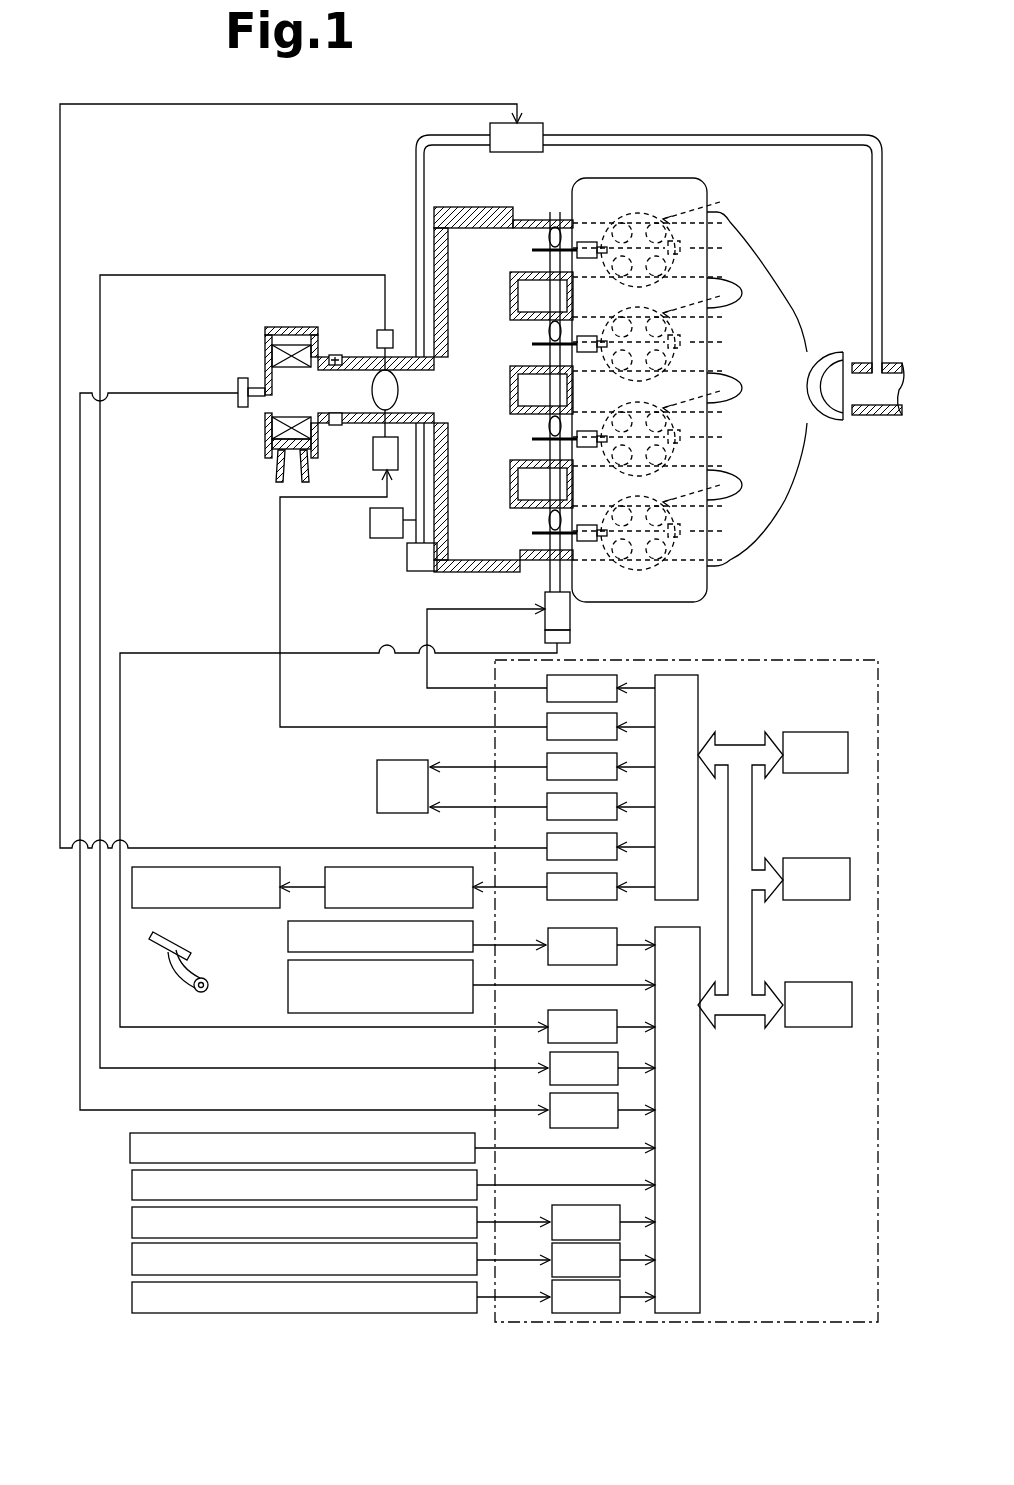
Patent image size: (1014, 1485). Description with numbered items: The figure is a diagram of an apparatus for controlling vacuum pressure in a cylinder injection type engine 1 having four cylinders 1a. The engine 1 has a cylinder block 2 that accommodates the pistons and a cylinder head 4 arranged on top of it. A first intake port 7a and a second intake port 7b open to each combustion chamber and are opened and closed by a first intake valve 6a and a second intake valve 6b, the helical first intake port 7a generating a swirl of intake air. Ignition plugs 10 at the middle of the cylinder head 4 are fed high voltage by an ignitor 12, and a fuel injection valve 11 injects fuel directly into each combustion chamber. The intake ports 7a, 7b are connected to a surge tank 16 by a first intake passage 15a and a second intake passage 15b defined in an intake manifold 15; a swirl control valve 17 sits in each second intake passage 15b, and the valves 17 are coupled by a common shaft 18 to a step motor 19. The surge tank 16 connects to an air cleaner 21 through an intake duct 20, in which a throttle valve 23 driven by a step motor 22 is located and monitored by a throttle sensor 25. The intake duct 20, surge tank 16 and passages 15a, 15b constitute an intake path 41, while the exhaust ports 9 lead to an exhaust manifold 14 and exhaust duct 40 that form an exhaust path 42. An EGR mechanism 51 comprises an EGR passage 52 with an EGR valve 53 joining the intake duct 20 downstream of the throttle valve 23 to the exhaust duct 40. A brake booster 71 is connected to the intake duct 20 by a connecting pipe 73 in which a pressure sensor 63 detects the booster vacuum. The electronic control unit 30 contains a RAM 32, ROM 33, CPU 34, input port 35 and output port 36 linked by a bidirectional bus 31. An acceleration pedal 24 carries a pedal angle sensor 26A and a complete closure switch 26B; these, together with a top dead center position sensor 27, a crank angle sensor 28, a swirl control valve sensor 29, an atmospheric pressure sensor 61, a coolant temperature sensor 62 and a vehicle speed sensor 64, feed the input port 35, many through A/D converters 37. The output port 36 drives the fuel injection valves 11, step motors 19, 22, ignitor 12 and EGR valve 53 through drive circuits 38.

The engine 1 is at (716, 169).
The cylinder 1a is at (706, 224).
The cylinder block 2 is at (695, 603).
The cylinder head 4 is at (726, 631).
The first intake valve 6a is at (626, 270).
The second intake valve 6b is at (632, 224).
The first intake port 7a is at (612, 625).
The second intake port 7b is at (616, 195).
The exhaust port 9 is at (716, 254).
The ignition plug 10 is at (302, 866).
The fuel injection valve 11 is at (589, 242).
The ignitor 12 is at (447, 866).
The exhaust manifold 14 is at (802, 428).
The intake manifold 15 is at (527, 224).
The first intake passage 15a is at (535, 264).
The second intake passage 15b is at (530, 244).
The surge tank 16 is at (440, 237).
The swirl control valve 17 is at (553, 213).
The common shaft 18 is at (510, 395).
The step motor 19 is at (545, 625).
The intake duct 20 is at (352, 357).
The air cleaner 21 is at (265, 432).
The step motor 22 is at (373, 455).
The throttle valve 23 is at (398, 390).
The acceleration pedal 24 is at (165, 950).
The throttle sensor 25 is at (380, 330).
The pedal angle sensor 26A is at (288, 937).
The complete closure switch 26B is at (288, 972).
The top dead center position sensor 27 is at (130, 1147).
The crank angle sensor 28 is at (132, 1185).
The swirl control valve sensor 29 is at (570, 640).
The electronic control unit 30 is at (797, 660).
The bidirectional bus 31 is at (745, 745).
The random access memory 32 is at (822, 732).
The read only memory 33 is at (825, 858).
The central processing unit 34 is at (830, 982).
The input port 35 is at (700, 1180).
The output port 36 is at (698, 680).
The analog-to-digital converter 37 is at (550, 928).
The drive circuit 38 is at (546, 690).
The exhaust duct 40 is at (880, 416).
The intake path 41 is at (441, 348).
The exhaust path 42 is at (898, 360).
The exhaust gas recirculation mechanism 51 is at (649, 124).
The EGR passage 52 is at (807, 134).
The EGR valve 53 is at (545, 127).
The atmospheric pressure sensor 61 is at (242, 378).
The coolant temperature sensor 62 is at (132, 1222).
The pressure sensor 63 is at (370, 522).
The vehicle speed sensor 64 is at (132, 1296).
The brake booster 71 is at (407, 556).
The connecting pipe 73 is at (442, 475).